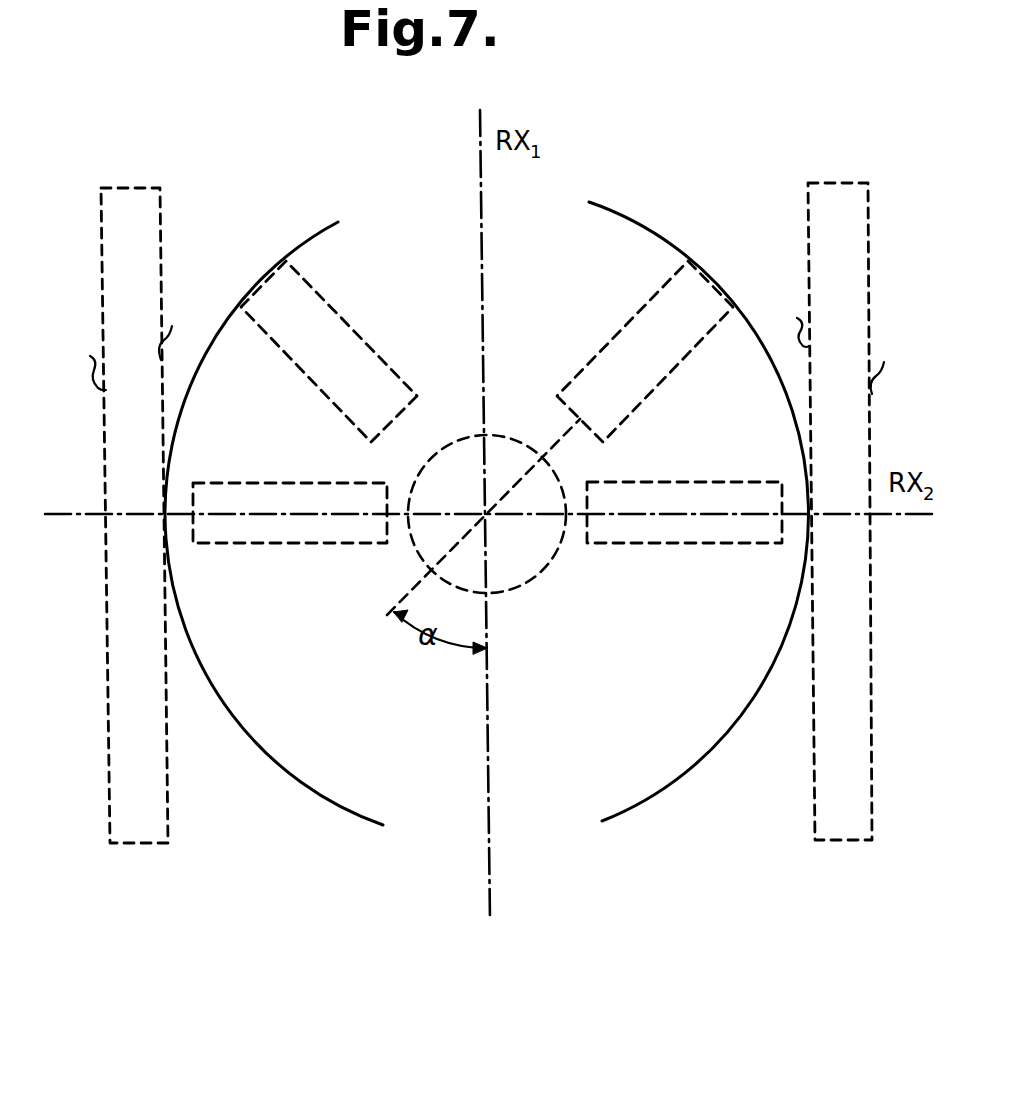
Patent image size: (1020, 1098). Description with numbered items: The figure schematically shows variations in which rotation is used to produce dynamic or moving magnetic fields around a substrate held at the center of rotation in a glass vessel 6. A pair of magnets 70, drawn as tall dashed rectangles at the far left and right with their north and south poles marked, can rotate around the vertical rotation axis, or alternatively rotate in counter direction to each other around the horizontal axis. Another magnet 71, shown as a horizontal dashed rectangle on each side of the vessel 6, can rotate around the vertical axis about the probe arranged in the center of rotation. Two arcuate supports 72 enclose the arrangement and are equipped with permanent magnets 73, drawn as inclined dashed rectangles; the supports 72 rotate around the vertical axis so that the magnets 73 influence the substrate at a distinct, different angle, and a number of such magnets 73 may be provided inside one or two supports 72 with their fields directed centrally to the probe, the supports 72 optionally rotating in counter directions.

The glass vessel 6 is at (547, 566).
The pair of magnets 70 is at (152, 240).
The magnet 71 is at (302, 484).
The supports 72 is at (337, 222).
The permanent magnets 73 is at (333, 306).